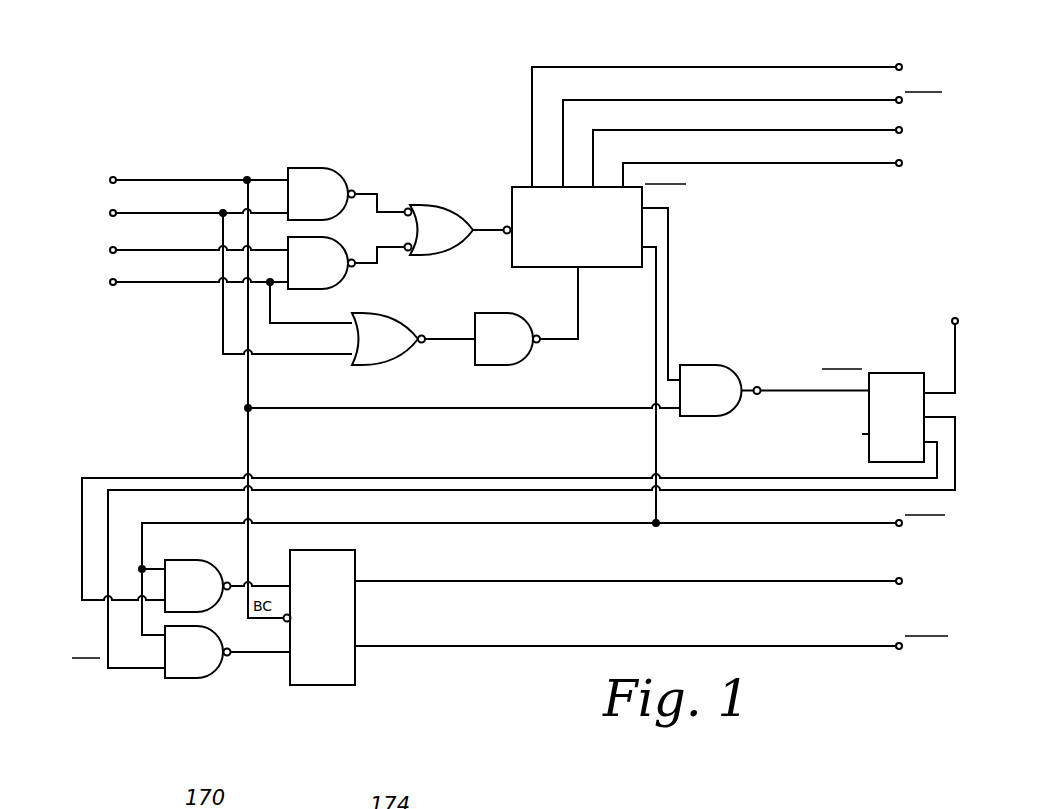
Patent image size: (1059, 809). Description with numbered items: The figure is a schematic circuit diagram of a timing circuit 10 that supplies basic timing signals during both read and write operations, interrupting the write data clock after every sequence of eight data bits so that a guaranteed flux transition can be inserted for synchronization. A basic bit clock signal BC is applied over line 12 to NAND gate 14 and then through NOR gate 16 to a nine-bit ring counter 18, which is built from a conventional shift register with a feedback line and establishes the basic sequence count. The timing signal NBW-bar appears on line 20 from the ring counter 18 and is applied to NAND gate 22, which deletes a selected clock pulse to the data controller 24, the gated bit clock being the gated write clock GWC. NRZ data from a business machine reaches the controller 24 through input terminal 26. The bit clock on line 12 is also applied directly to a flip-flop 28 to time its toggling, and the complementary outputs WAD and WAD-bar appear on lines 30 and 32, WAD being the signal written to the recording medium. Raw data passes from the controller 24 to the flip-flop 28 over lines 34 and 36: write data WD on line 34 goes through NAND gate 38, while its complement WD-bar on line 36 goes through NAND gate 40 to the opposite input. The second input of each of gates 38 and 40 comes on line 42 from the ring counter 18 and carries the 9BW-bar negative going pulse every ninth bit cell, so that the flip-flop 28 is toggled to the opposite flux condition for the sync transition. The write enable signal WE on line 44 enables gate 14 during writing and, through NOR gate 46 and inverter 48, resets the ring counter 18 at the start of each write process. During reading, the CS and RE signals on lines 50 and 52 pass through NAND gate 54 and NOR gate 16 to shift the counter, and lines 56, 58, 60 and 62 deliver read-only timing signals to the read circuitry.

The timing circuit 10 is at (415, 150).
The line 12 is at (177, 180).
The NAND gate 14 is at (322, 185).
The NOR gate 16 is at (438, 230).
The nine-bit ring counter 18 is at (607, 268).
The line 20 is at (668, 297).
The NAND gate 22 is at (722, 376).
The data controller 24 is at (880, 380).
The input terminal 26 is at (953, 322).
The flip-flop 28 is at (342, 570).
The line 30 is at (688, 581).
The line 32 is at (597, 646).
The line 34 is at (455, 478).
The line 36 is at (492, 490).
The NAND gate 38 is at (207, 572).
The NAND gate 40 is at (178, 669).
The line 42 is at (548, 525).
The line 44 is at (140, 213).
The NOR gate 46 is at (388, 348).
The inverter 48 is at (512, 353).
The line 50 is at (140, 250).
The line 52 is at (167, 283).
The NAND gate 54 is at (325, 277).
The line 56 is at (611, 68).
The line 58 is at (688, 100).
The line 60 is at (762, 130).
The line 62 is at (707, 163).